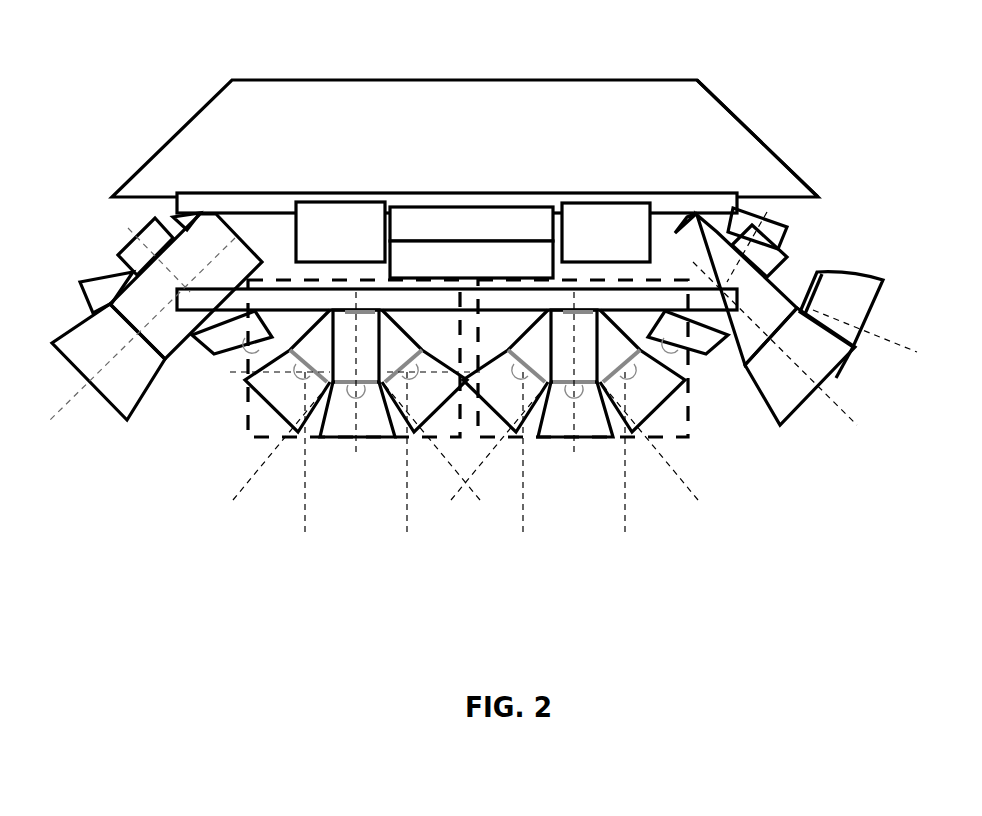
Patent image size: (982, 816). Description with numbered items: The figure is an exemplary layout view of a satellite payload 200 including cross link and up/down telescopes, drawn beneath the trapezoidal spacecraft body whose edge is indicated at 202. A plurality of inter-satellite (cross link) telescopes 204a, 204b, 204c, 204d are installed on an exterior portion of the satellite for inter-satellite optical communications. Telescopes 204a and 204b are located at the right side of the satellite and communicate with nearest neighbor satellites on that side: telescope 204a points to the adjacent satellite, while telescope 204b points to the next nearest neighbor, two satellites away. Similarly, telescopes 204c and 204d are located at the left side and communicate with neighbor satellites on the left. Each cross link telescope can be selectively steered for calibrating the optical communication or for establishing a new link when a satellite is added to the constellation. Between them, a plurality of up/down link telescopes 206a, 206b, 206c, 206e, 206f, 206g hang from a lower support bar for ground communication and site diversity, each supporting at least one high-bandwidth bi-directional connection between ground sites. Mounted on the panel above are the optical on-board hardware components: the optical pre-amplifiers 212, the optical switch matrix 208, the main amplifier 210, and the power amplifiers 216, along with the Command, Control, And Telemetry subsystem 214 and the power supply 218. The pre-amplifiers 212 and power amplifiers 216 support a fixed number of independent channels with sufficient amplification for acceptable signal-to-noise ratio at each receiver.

The satellite payload 200 is at (465, 123).
The spacecraft body edge 202 is at (700, 96).
The inter-satellite (cross link) telescope 204a is at (860, 278).
The inter-satellite (cross link) telescope 204b is at (797, 412).
The inter-satellite (cross link) telescope 204c is at (80, 298).
The inter-satellite (cross link) telescope 204d is at (107, 390).
The up/down link telescope 206a is at (250, 393).
The up/down link telescope 206b is at (337, 437).
The up/down link telescope 206c is at (408, 432).
The up/down link telescope 206e is at (468, 490).
The up/down link telescope 206f is at (590, 428).
The up/down link telescope 206g is at (677, 400).
The optical switch matrix 208 is at (507, 205).
The main amplifier 210 is at (403, 262).
The optical pre-amplifier 212 is at (315, 220).
The Command, Control, And Telemetry (CC&T) subsystem 214 is at (197, 212).
The power amplifier 216 is at (632, 203).
The power supply 218 is at (713, 227).